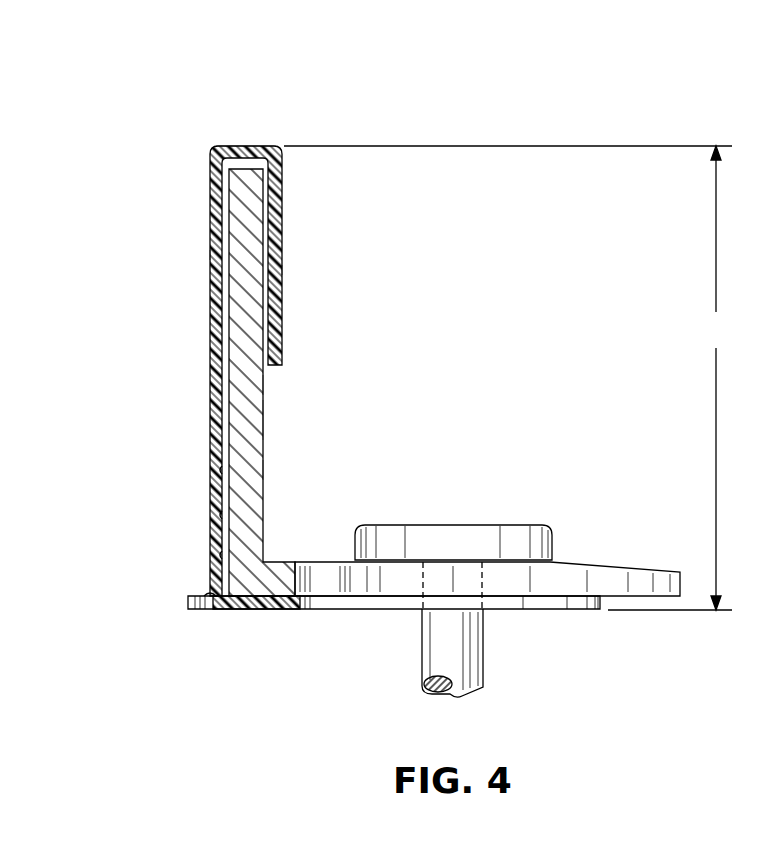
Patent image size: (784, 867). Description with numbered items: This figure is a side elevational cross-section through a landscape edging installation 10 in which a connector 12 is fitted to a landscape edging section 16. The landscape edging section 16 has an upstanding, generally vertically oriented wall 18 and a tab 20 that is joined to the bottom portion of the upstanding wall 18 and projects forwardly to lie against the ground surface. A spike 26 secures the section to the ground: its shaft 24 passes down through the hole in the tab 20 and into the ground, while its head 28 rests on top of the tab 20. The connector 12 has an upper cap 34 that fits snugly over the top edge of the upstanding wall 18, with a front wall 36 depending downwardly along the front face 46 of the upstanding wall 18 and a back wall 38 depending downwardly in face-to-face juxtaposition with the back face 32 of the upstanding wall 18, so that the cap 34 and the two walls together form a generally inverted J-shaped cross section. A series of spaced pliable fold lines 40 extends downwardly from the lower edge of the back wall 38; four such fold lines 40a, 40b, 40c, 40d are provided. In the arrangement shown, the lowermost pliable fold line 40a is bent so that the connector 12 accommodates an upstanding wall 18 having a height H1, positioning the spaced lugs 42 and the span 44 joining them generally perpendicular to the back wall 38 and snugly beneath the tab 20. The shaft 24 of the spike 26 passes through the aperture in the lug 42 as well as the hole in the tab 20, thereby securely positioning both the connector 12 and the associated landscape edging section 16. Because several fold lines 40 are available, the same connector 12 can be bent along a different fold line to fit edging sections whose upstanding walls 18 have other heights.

The landscape edging installation 10 is at (177, 96).
The connector 12 is at (266, 140).
The landscape edging section 16 is at (270, 420).
The upstanding wall 18 is at (258, 470).
The tab 20 is at (606, 560).
The shaft 24 is at (424, 630).
The spike 26 is at (419, 672).
The head 28 is at (460, 526).
The back face 32 is at (230, 318).
The upper cap 34 is at (237, 147).
The front wall 36 is at (280, 272).
The back wall 38 is at (213, 253).
The pliable fold lines 40 is at (148, 492).
The lowermost pliable fold line 40a is at (208, 611).
The pliable fold line 40b is at (218, 555).
The pliable fold line 40c is at (218, 515).
The pliable fold line 40d is at (218, 470).
The lug 42 is at (510, 600).
The span 44 is at (280, 610).
The front face 46 is at (263, 385).
The height H1 is at (510, 378).